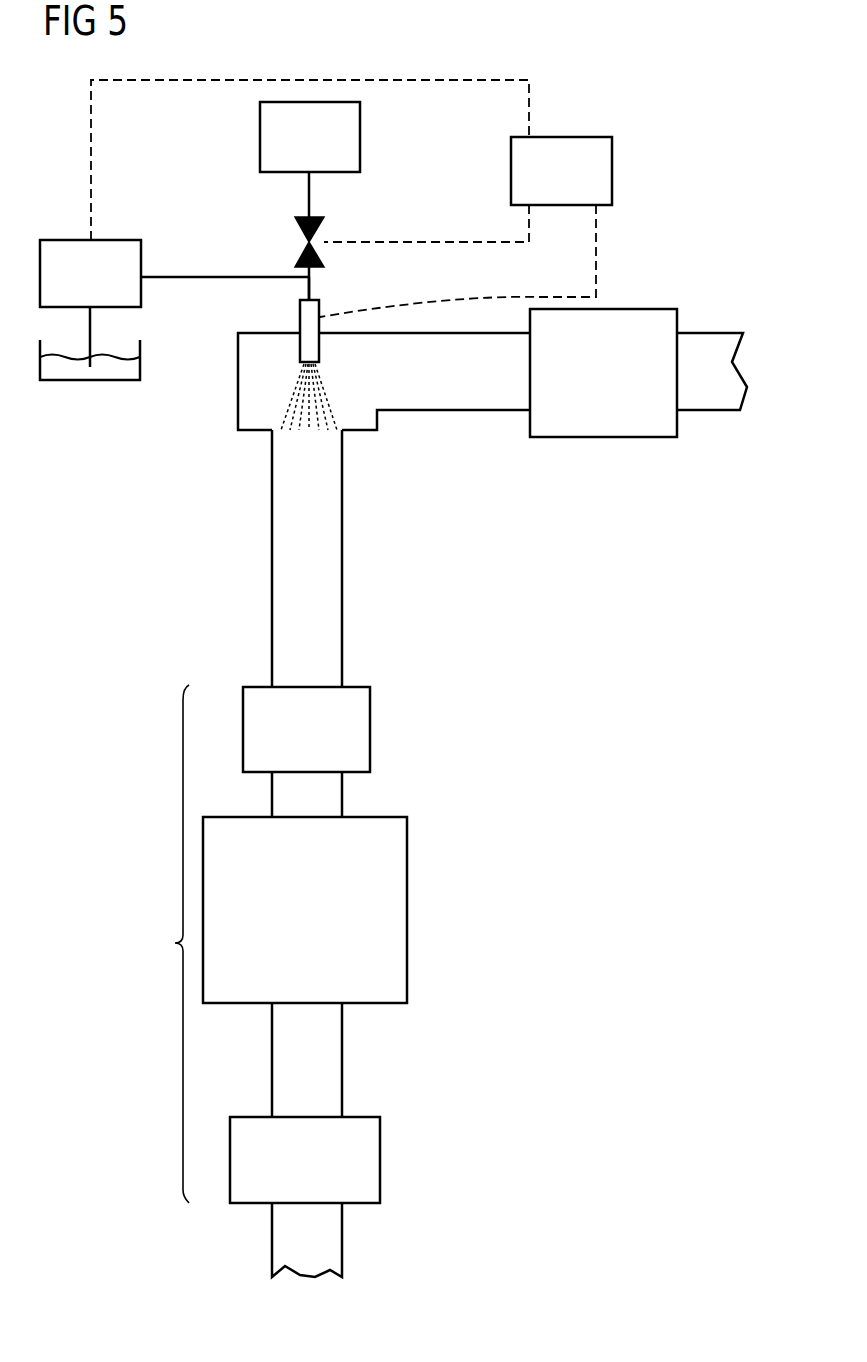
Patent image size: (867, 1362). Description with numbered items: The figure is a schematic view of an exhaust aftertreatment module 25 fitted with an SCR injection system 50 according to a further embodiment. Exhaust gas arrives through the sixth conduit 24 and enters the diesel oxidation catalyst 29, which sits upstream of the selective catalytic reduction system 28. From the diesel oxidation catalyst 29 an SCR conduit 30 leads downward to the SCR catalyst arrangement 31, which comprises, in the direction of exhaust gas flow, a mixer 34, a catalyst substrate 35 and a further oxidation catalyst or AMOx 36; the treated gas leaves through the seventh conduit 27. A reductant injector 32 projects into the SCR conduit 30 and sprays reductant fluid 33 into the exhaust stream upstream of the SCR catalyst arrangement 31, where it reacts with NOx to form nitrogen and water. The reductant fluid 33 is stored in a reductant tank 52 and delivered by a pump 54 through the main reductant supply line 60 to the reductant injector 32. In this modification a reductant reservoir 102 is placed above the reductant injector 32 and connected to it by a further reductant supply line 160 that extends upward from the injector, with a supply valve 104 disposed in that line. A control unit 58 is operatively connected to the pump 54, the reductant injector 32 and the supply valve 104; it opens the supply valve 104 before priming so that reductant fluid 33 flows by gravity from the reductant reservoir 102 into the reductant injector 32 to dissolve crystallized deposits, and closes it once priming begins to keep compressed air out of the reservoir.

The reductant reservoir 102 is at (360, 135).
The control unit 58 is at (558, 137).
The pump 54 is at (118, 235).
The reductant supply line 60 is at (167, 275).
The supply valve 104 is at (298, 232).
The further reductant supply line 160 is at (312, 283).
The reductant injector 32 is at (300, 315).
The sixth conduit 24 is at (707, 335).
The diesel oxidation catalyst 29 is at (626, 307).
The reductant fluid 33 is at (322, 381).
The reductant tank 52 is at (70, 381).
The SCR injection system 50 is at (155, 437).
The SCR conduit 30 is at (343, 538).
The mixer 34 is at (371, 725).
The catalyst substrate 35 is at (408, 865).
The further oxidation catalyst or AMOx 36 is at (381, 1153).
The seventh conduit 27 is at (343, 1243).
The selective catalytic reduction system 28 is at (513, 745).
The SCR catalyst arrangement 31 is at (168, 944).
The exhaust aftertreatment module 25 is at (633, 960).